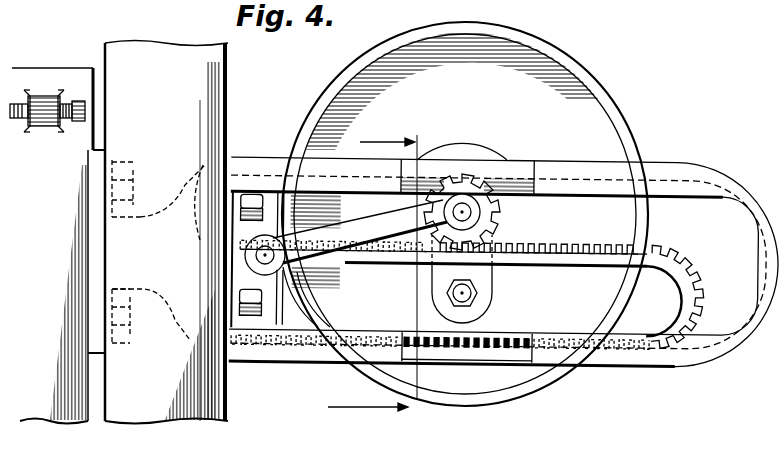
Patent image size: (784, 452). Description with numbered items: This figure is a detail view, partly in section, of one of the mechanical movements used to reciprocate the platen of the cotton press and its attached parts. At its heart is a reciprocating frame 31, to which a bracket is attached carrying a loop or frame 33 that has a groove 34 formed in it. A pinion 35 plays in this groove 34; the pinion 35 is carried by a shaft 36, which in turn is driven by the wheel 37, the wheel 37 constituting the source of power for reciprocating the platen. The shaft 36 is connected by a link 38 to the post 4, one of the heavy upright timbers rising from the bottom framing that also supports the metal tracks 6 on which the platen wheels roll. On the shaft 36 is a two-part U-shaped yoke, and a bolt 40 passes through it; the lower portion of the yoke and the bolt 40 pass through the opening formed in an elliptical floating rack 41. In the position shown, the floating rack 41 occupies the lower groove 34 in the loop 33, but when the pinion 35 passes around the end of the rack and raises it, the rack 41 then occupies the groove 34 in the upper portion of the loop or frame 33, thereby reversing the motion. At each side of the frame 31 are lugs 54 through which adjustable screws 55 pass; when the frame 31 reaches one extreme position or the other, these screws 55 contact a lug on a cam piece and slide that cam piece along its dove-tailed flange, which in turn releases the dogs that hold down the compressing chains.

The upright timber 4 is at (182, 102).
The metal tracks 6 is at (378, 273).
The reciprocating frame 31 is at (67, 400).
The loop or frame 33 is at (689, 172).
The groove 34 is at (592, 162).
The pinion 35 is at (510, 218).
The shaft 36 is at (466, 206).
The wheel 37 is at (606, 112).
The link 38 is at (369, 231).
The bolt 40 is at (478, 298).
The elliptical floating rack 41 is at (735, 258).
The lugs 54 is at (40, 95).
The adjustable screws 55 is at (66, 121).